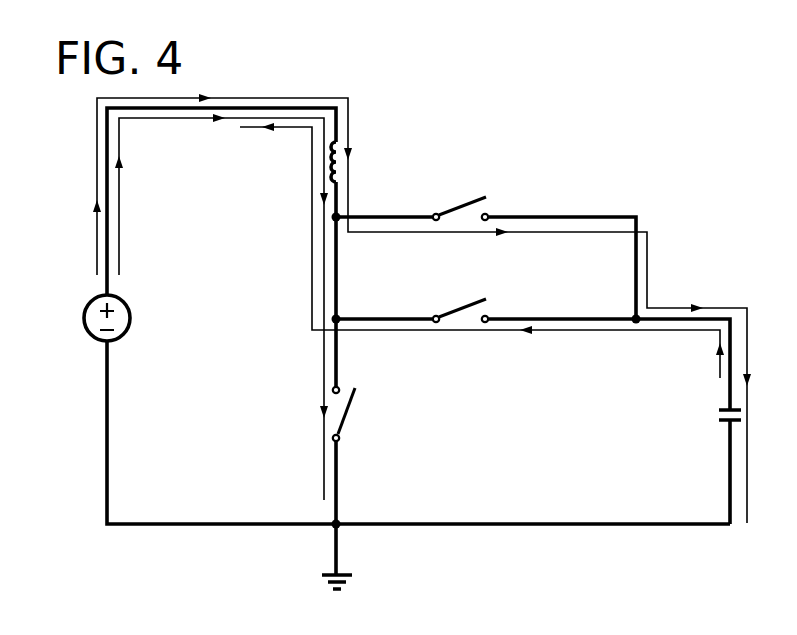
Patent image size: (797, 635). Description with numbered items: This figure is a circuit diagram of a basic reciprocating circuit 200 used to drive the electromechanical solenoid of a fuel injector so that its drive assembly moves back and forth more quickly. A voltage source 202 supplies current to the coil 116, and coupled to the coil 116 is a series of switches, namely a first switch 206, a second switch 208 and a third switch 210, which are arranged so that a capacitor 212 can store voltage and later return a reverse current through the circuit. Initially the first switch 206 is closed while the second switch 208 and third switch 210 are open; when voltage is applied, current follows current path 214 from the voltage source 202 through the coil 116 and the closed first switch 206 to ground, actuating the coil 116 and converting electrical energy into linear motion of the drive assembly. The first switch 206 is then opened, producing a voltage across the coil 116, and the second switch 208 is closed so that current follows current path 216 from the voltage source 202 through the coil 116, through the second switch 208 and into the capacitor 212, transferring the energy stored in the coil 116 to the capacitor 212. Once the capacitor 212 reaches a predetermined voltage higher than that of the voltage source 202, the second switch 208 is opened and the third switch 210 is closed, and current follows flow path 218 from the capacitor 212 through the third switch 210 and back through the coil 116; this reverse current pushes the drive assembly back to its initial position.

The circuit 200 is at (476, 125).
The voltage source 202 is at (90, 303).
The coil 116 is at (336, 146).
The first switch 206 is at (372, 404).
The second switch 208 is at (466, 205).
The third switch 210 is at (462, 309).
The capacitor 212 is at (725, 420).
The current path 214 is at (119, 192).
The current path 216 is at (97, 163).
The flow path 218 is at (718, 352).